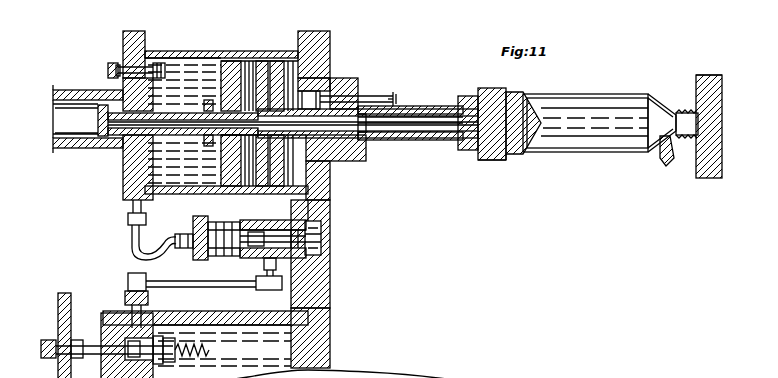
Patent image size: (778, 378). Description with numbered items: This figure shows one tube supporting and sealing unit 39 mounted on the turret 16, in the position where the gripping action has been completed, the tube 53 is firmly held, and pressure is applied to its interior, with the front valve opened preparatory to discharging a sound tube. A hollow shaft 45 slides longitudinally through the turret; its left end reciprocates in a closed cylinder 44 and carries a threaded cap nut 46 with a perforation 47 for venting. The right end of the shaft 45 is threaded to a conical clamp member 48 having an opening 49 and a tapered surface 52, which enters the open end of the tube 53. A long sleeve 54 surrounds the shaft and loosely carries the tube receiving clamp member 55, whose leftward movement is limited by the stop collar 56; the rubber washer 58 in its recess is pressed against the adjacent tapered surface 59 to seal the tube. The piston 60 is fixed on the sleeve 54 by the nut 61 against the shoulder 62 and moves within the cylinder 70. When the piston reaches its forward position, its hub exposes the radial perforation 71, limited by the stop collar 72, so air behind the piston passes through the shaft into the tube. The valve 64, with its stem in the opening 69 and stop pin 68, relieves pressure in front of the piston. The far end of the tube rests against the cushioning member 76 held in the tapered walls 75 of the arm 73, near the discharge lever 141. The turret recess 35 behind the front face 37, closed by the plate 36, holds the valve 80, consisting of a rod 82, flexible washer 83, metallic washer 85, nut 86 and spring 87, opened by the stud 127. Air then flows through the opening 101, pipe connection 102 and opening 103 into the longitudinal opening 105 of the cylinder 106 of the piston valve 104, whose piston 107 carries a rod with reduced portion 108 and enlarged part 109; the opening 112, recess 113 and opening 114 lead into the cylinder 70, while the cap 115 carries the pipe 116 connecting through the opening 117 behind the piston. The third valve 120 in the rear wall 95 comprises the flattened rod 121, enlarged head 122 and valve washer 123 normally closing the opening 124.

The turret 16 is at (312, 28).
The recess 35 is at (274, 367).
The plate 36 is at (322, 340).
The front face 37 is at (322, 283).
The tube supporting and sealing unit 39 is at (422, 92).
The hollow closed cylinder 44 is at (55, 142).
The hollow shaft 45 is at (366, 134).
The threaded cap nut 46 is at (96, 142).
The perforation 47 is at (88, 117).
The conical clamp member 48 is at (558, 121).
The opening 49 is at (560, 109).
The conical surface 52 is at (506, 152).
The tube 53 is at (600, 86).
The sleeve 54 is at (430, 104).
The tube receiving clamp member 55 is at (490, 82).
The stop collar 56 is at (458, 88).
The washer 58 is at (487, 153).
The tapered surface 59 is at (510, 88).
The piston 60 is at (257, 53).
The nut 61 is at (213, 144).
The shoulder 62 is at (302, 86).
The valve 64 is at (333, 87).
The cross pin 68 is at (388, 91).
The opening 69 is at (385, 86).
The cylinder 70 is at (196, 43).
The radial perforation 71 is at (188, 118).
The stop collar 72 is at (196, 97).
The arm 73 is at (714, 146).
The tapered walls 75 is at (697, 67).
The cushioning member 76 is at (688, 96).
The valve 80 is at (165, 355).
The rod 82 is at (90, 348).
The washer 83 is at (158, 325).
The metallic washer 85 is at (199, 302).
The nut 86 is at (222, 309).
The spring 87 is at (192, 352).
The rear wall 95 is at (115, 33).
The opening 101 is at (93, 315).
The pipe connection 102 is at (160, 273).
The opening 103 is at (256, 254).
The piston valve 104 is at (229, 213).
The longitudinal opening 105 is at (286, 222).
The cylinder 106 is at (262, 214).
The piston 107 is at (205, 214).
The reduced portion 108 is at (238, 252).
The enlarged part 109 is at (185, 215).
The longitudinal opening 112 is at (318, 214).
The recess 113 is at (314, 226).
The opening 114 is at (322, 172).
The cap 115 is at (168, 228).
The pipe 116 is at (124, 238).
The opening 117 is at (115, 180).
The third valve 120 is at (100, 62).
The flattened rod 121 is at (152, 44).
The enlarged head 122 is at (106, 68).
The valve washer 123 is at (147, 72).
The opening 124 is at (123, 58).
The stud 127 is at (118, 340).
The discharge lever 141 is at (660, 158).